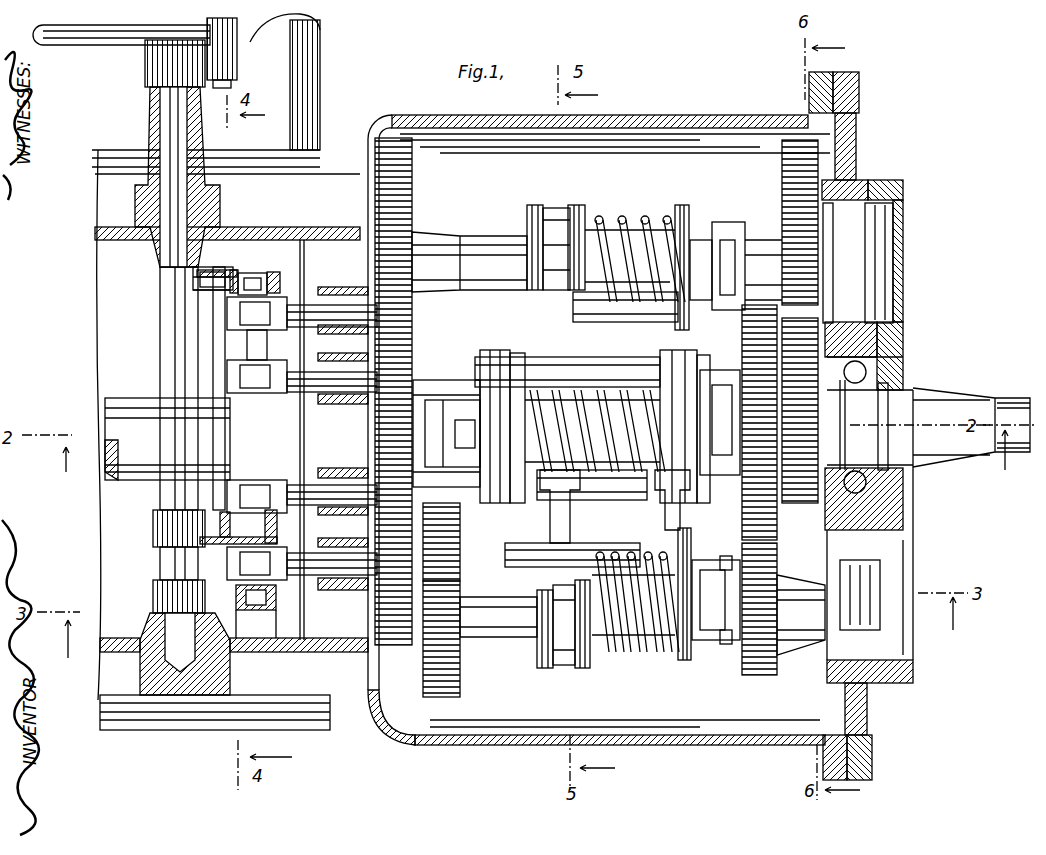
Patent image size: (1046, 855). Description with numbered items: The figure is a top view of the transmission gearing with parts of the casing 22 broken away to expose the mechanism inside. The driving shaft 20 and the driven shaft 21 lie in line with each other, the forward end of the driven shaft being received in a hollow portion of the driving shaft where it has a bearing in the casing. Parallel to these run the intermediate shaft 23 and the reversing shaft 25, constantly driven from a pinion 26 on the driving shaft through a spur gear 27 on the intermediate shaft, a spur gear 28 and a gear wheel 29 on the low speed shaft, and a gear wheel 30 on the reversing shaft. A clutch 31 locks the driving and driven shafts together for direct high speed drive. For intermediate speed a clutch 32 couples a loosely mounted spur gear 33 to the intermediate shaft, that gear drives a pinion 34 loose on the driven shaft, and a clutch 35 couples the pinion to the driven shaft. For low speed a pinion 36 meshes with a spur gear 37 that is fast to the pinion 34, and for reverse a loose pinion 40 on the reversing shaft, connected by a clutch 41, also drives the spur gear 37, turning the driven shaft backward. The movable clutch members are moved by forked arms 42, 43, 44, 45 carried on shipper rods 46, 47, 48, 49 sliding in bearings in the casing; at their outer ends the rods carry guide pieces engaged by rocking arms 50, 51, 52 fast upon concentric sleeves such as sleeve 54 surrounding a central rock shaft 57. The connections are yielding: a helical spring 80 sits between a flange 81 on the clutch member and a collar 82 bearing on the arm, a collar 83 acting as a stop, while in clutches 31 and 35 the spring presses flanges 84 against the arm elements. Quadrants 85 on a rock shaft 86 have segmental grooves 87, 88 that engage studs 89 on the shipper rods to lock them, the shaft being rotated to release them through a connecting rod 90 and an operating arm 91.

The driving shaft 20 is at (167, 439).
The driven shaft 21 is at (940, 427).
The casing 22 is at (628, 738).
The intermediate shaft 23 is at (485, 250).
The reversing shaft 25 is at (513, 628).
The pinion 26 is at (418, 385).
The spur gear 27 is at (412, 212).
The spur gear 28 is at (417, 717).
The gear wheel 29 is at (455, 515).
The gear wheel 30 is at (460, 520).
The clutch 31 is at (466, 425).
The clutch 32 is at (736, 254).
The spur gear 33 is at (786, 222).
The pinion 34 is at (802, 504).
The clutch 35 is at (720, 422).
The pinion 36 is at (782, 556).
The spur gear 37 is at (745, 493).
The pinion 40 is at (756, 672).
The clutch 41 is at (716, 600).
The forked arm 42 is at (595, 426).
The forked arm 43 is at (558, 208).
The forked arm 44 is at (570, 515).
The forked arm 45 is at (564, 625).
The shipper rod 46 is at (476, 414).
The shipper rod 47 is at (617, 322).
The shipper rod 48 is at (650, 508).
The shipper rod 49 is at (463, 559).
The rocking arm 50 is at (270, 348).
The rocking arm 51 is at (258, 268).
The rocking arm 52 is at (268, 500).
The concentric sleeve 54 is at (218, 340).
The central rock shaft 57 is at (277, 630).
The helical spring 80 is at (648, 216).
The flange 81 is at (683, 205).
The collar 82 is at (578, 207).
The collar 83 is at (535, 205).
The flange 84 is at (525, 505).
The quadrant 85 is at (165, 530).
The rock shaft 86 is at (163, 310).
The segmental guiding groove 87 is at (200, 275).
The segmental guiding groove 88 is at (285, 278).
The stud 89 is at (200, 283).
The connecting rod 90 is at (75, 44).
The operating arm 91 is at (238, 76).